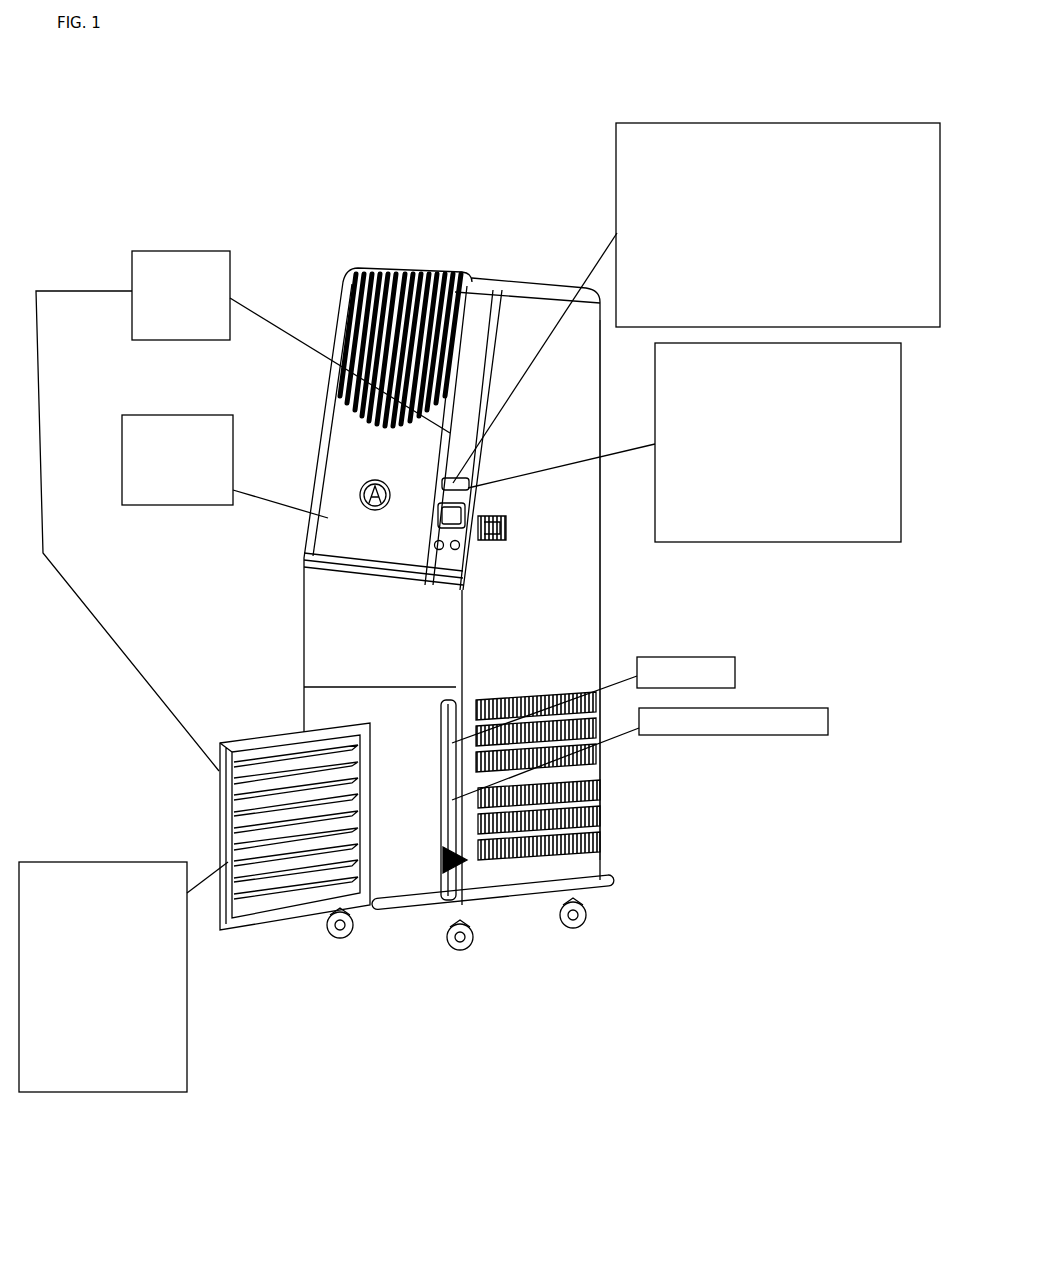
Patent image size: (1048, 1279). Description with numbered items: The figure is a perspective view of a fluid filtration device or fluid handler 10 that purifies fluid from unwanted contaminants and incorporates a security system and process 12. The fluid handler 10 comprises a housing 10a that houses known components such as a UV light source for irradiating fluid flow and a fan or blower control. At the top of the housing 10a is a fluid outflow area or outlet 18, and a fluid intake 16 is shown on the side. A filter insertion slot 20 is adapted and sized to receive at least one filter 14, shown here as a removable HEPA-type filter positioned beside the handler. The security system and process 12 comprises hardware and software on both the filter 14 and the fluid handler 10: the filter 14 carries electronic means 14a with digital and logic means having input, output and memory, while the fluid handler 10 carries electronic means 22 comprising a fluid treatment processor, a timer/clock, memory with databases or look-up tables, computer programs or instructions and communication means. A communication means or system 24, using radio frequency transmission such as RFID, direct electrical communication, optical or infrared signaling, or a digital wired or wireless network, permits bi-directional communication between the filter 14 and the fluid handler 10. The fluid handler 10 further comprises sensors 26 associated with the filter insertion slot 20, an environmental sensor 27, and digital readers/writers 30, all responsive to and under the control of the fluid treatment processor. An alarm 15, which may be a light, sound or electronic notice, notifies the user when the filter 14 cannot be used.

The fluid filtration device or fluid handler 10 is at (170, 145).
The housing 10a is at (580, 557).
The security system and process 12 is at (180, 251).
The filter 14 is at (278, 930).
The electronic means 14a is at (100, 1092).
The alarm 15 is at (148, 415).
The fluid intake 16 is at (577, 777).
The fluid outflow area or outlet 18 is at (360, 290).
The filter insertion slot 20 is at (457, 867).
The electronic means 22 is at (820, 542).
The communication means or system 24 is at (616, 140).
The sensors 26 is at (737, 660).
The environmental sensor 27 is at (488, 527).
The digital readers/writers 30 is at (828, 735).